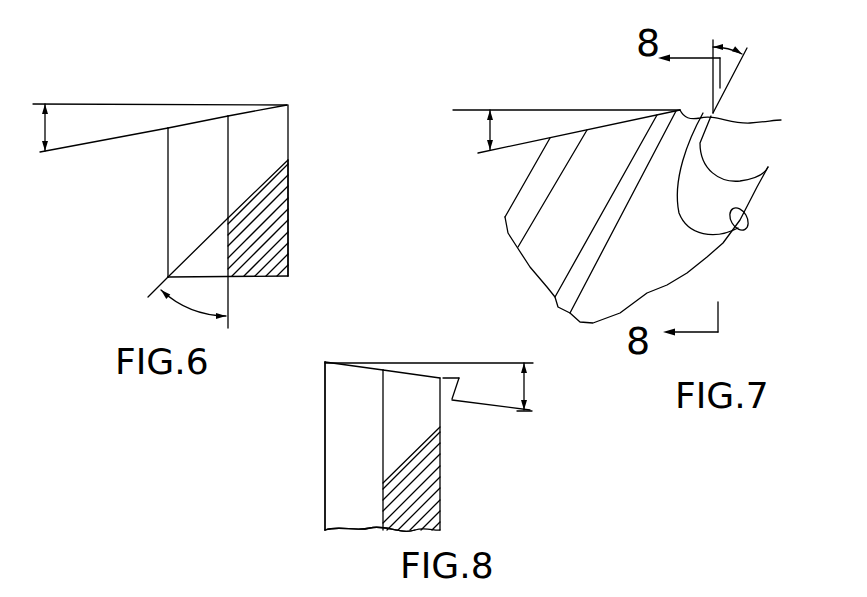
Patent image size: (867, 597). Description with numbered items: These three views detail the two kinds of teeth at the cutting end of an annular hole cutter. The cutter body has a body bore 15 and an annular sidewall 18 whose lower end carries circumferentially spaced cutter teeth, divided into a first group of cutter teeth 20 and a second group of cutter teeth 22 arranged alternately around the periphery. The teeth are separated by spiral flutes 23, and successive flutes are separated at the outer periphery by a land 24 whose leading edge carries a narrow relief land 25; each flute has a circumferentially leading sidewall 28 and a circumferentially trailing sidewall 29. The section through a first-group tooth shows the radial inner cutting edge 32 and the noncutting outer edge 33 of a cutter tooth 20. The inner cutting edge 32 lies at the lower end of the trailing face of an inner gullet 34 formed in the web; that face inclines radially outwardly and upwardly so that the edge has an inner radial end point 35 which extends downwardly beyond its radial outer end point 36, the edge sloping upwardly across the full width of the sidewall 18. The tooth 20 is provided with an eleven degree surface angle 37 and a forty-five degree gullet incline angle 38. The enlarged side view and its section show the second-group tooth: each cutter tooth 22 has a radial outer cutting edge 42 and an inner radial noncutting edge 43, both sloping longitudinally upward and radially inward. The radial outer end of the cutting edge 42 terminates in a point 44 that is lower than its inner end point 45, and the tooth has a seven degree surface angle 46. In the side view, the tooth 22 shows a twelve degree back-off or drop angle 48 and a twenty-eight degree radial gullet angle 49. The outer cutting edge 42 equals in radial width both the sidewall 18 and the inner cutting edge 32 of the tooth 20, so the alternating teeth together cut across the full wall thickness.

In FIG. 6, the body bore 15 is at (289, 198).
In FIG. 8, the body bore 15 is at (441, 520).
In FIG. 6, the sidewall 18 is at (272, 231).
In FIG. 8, the sidewall 18 is at (428, 487).
In FIG. 6, the cutter tooth 20 is at (292, 261).
In FIG. 8, the cutter tooth 22 is at (314, 517).
In FIG. 7, the cutter tooth 22 is at (510, 188).
In FIG. 6, the spiral flute 23 is at (226, 252).
In FIG. 8, the spiral flute 23 is at (368, 525).
In FIG. 7, the land 24 is at (550, 243).
In FIG. 6, the relief land 25 is at (168, 247).
In FIG. 8, the relief land 25 is at (325, 492).
In FIG. 7, the relief land 25 is at (600, 233).
In FIG. 7, the circumferentially leading sidewall 28 is at (523, 213).
In FIG. 6, the circumferentially trailing sidewall 29 is at (183, 205).
In FIG. 8, the circumferentially trailing sidewall 29 is at (336, 442).
In FIG. 7, the circumferentially trailing sidewall 29 is at (625, 215).
In FIG. 6, the radial inner cutting edge 32 is at (246, 108).
In FIG. 6, the noncutting outer edge 33 is at (193, 123).
In FIG. 6, the inner gullet 34 is at (250, 196).
In FIG. 8, the inner gullet 34 is at (413, 453).
In FIG. 7, the inner gullet 34 is at (741, 239).
In FIG. 6, the inner radial end point 35 is at (290, 105).
In FIG. 6, the radial outer end point 36 is at (228, 117).
In FIG. 6, the surface angle 37 is at (42, 125).
In FIG. 6, the gullet incline angle 38 is at (185, 313).
In FIG. 8, the radial outer cutting edge 42 is at (346, 363).
In FIG. 8, the inner radial noncutting edge 43 is at (425, 376).
In FIG. 7, the inner radial noncutting edge 43 is at (748, 125).
In FIG. 8, the point 44 is at (328, 362).
In FIG. 7, the point 44 is at (683, 110).
In FIG. 8, the inner end point 45 is at (382, 370).
In FIG. 8, the surface angle 46 is at (527, 384).
In FIG. 7, the back-off angle 48 is at (488, 131).
In FIG. 7, the radial gullet angle 49 is at (738, 45).